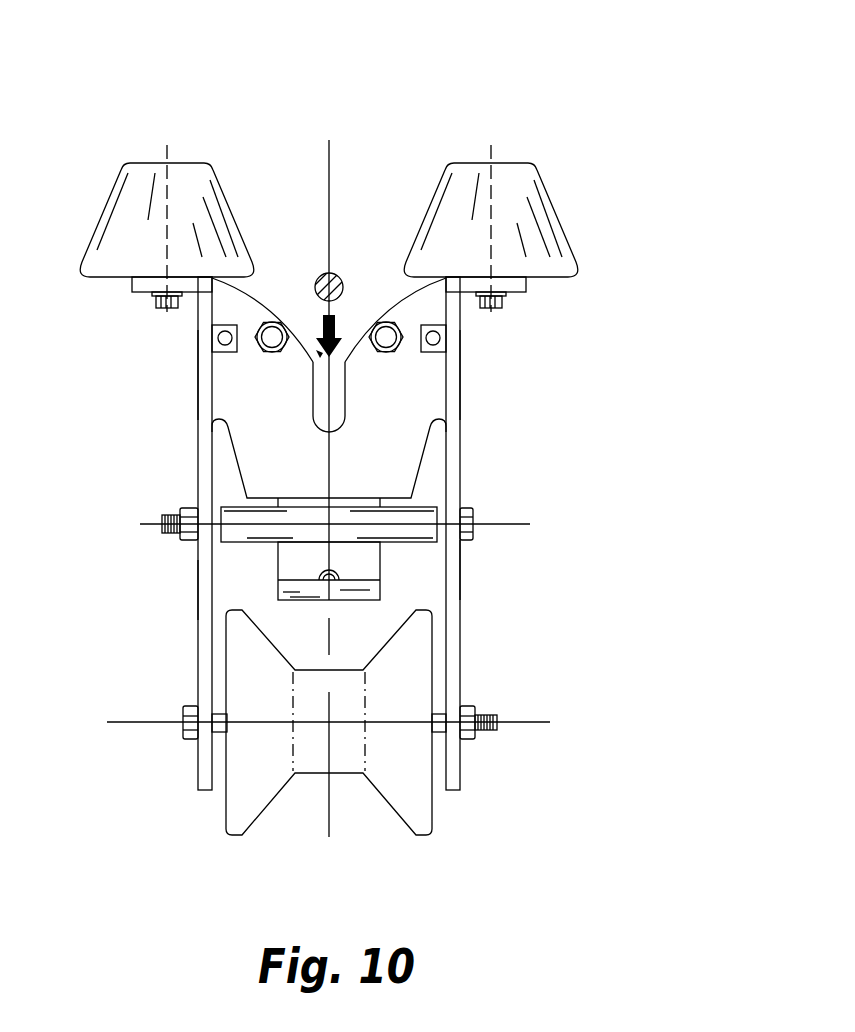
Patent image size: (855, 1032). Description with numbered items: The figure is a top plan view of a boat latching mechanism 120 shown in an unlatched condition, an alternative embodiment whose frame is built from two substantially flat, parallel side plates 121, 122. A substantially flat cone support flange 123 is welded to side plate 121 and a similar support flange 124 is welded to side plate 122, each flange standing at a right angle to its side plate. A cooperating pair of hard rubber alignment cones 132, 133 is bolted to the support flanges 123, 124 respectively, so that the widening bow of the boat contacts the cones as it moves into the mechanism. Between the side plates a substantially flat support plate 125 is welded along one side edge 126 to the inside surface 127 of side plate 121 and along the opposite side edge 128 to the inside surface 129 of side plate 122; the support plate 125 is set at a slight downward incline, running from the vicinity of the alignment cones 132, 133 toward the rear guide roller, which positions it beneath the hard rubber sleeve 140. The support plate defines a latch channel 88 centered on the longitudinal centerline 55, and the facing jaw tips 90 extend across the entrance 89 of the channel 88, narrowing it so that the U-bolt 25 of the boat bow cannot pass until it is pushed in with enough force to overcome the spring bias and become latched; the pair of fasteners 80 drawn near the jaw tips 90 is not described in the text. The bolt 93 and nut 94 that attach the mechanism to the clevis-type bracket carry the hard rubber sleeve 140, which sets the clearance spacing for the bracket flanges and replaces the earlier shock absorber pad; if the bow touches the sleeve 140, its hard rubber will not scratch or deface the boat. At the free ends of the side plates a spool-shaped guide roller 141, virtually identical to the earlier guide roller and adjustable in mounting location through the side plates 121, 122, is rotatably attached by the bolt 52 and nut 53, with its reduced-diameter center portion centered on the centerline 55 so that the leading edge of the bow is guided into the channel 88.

The latching mechanism 120 is at (458, 108).
The alignment cone 132 is at (190, 188).
The alignment cone 133 is at (512, 193).
The U-bolt 25 is at (340, 270).
The nuts 80 is at (265, 325).
The entrance 89 is at (320, 352).
The jaw tips 90 is at (312, 370).
The latch channel 88 is at (341, 408).
The cone support flange 123 is at (140, 286).
The cone support flange 124 is at (512, 285).
The side edge 126 is at (198, 370).
The side edge 128 is at (458, 372).
The support plate 125 is at (398, 418).
The hard rubber sleeve 140 is at (430, 500).
The nut 94 is at (183, 512).
The bolt 93 is at (474, 516).
The inside surface 127 is at (212, 602).
The inside surface 129 is at (437, 573).
The side plate 121 is at (198, 625).
The side plate 122 is at (460, 620).
The bolt 52 is at (183, 740).
The nut 53 is at (477, 739).
The guide roller 141 is at (238, 808).
The longitudinal centerline 55 is at (329, 828).